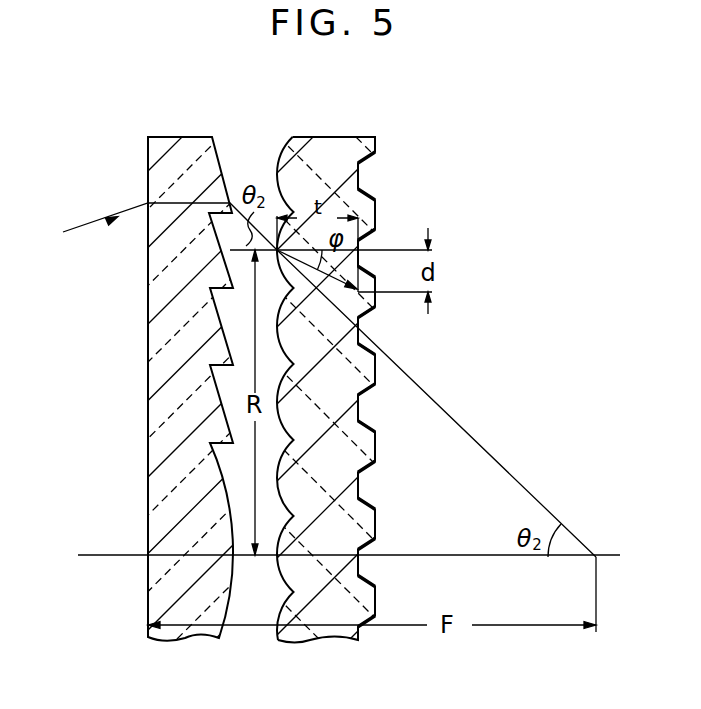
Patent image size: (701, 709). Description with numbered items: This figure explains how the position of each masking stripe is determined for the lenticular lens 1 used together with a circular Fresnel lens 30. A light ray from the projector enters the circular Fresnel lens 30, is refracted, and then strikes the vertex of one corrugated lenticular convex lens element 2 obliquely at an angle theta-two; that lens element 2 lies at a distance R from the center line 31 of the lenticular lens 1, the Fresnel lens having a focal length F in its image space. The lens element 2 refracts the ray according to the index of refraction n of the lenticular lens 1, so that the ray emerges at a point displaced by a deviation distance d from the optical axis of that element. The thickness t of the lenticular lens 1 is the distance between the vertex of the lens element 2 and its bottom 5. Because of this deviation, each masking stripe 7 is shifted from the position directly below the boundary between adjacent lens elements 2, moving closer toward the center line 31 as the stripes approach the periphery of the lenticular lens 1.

The lenticular lens 1 is at (348, 133).
The corrugated lenticular convex lens element 2 is at (277, 172).
The bottom 5 is at (363, 246).
The masking stripe 7 is at (378, 198).
The circular Fresnel lens 30 is at (178, 137).
The center line 31 is at (408, 555).